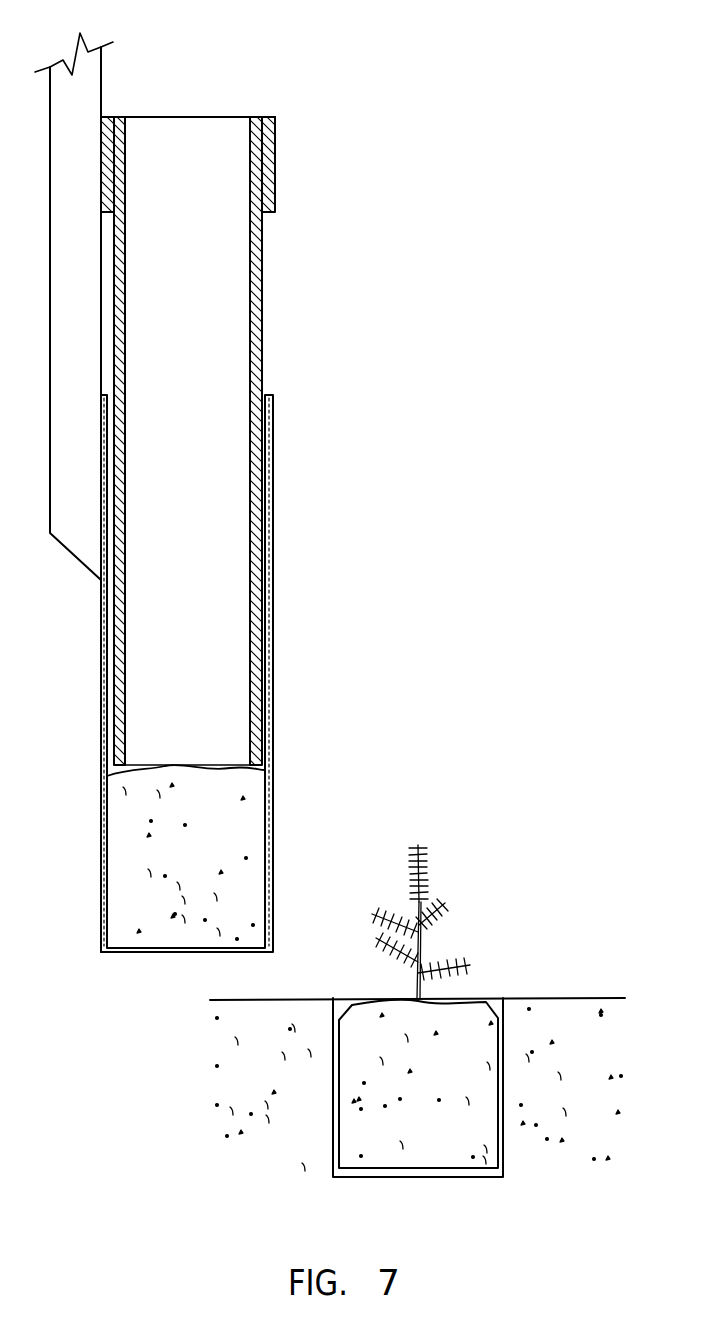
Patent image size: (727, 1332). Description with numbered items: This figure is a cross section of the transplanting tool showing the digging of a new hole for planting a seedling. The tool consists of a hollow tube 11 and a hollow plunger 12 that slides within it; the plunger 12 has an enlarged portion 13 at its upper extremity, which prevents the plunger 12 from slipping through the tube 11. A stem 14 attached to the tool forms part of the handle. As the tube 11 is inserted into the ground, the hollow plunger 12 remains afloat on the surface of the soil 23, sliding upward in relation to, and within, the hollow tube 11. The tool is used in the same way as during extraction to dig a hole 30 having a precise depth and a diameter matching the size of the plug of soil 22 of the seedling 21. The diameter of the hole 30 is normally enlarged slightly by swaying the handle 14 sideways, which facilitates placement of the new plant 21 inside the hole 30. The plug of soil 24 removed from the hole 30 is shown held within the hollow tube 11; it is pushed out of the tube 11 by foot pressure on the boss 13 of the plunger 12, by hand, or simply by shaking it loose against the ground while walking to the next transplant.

The hollow tube 11 is at (271, 460).
The hollow plunger 12 is at (262, 327).
The enlarged portion 13 is at (275, 191).
The stem 14 is at (101, 88).
The seedling 21 is at (438, 875).
The plug of soil 22 is at (468, 1023).
The soil 23 is at (577, 1005).
The plug of soil 24 is at (242, 830).
The hole 30 is at (333, 1005).